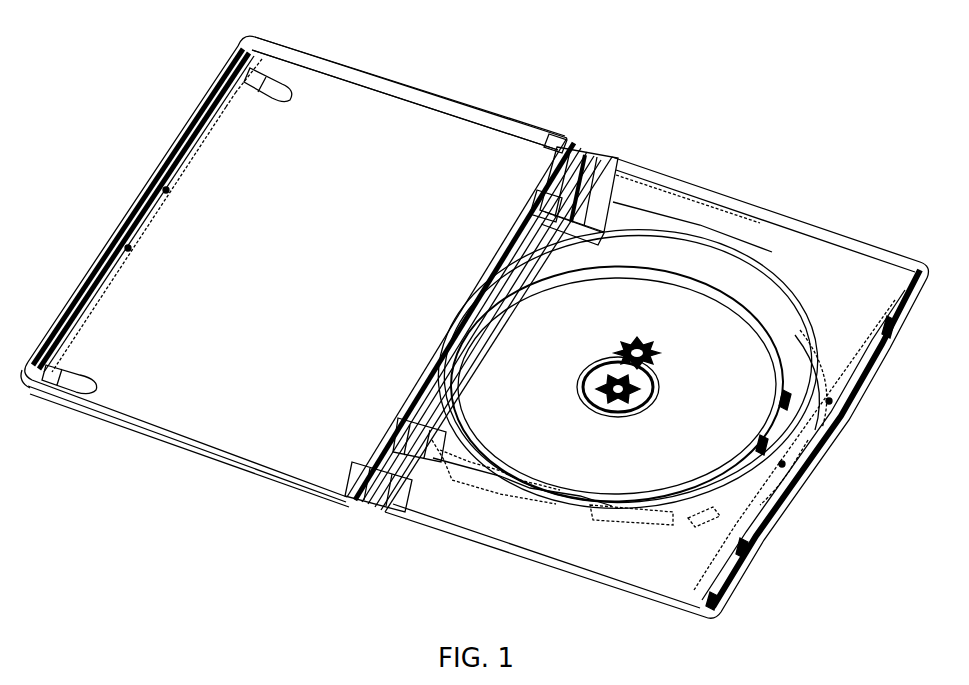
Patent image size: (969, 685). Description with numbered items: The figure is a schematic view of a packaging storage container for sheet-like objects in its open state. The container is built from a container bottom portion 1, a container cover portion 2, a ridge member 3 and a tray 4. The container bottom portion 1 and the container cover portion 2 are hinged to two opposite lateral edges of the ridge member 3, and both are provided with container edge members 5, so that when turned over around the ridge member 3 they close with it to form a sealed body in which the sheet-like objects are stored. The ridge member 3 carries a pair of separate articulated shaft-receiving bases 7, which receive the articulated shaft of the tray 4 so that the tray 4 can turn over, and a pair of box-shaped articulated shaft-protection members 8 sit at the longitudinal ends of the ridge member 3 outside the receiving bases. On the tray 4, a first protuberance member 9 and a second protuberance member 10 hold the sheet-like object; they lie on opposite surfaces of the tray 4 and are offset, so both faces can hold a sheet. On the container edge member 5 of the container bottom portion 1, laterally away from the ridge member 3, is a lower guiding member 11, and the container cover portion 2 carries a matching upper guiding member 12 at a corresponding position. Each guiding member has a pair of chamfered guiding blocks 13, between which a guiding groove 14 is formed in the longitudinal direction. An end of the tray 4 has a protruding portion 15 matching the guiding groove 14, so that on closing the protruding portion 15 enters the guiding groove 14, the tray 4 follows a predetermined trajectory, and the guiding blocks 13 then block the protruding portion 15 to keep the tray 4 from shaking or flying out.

The container bottom portion 1 is at (833, 277).
The container cover portion 2 is at (143, 397).
The ridge member 3 is at (587, 158).
The tray 4 is at (752, 347).
The container edge member 5 is at (363, 70).
The articulated shaft-receiving base 7 is at (410, 413).
The articulated shaft-protection member 8 is at (553, 172).
The first protuberance member 9 is at (597, 400).
The second protuberance member 10 is at (639, 343).
The lower guiding member 11 is at (836, 426).
The upper guiding member 12 is at (147, 213).
The guiding blocks 13 is at (132, 250).
The guiding groove 14 is at (807, 450).
The protruding portion 15 is at (790, 493).